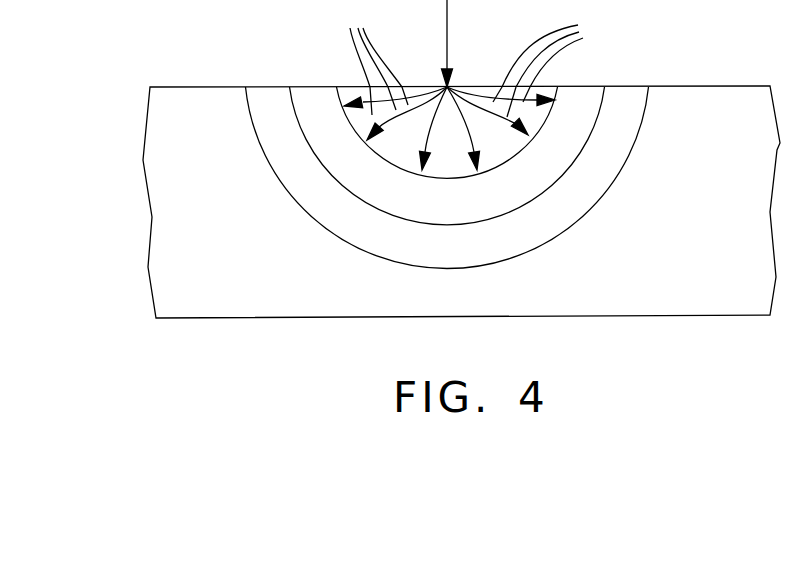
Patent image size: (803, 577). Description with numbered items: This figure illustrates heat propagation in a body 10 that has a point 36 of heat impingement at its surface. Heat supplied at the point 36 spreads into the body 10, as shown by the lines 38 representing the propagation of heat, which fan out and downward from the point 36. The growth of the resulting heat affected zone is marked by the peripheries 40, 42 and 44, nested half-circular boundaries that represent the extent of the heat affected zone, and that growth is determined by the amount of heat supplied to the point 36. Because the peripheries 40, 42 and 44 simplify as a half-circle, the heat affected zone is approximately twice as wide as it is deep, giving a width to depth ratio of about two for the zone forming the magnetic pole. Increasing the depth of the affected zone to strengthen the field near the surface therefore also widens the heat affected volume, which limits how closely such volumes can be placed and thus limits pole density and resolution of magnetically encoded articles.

The body 10 is at (155, 168).
The point of heat impingement 36 is at (447, 87).
The lines representing the propagation of heat 38 is at (473, 59).
The periphery 40 is at (435, 180).
The periphery 42 is at (580, 157).
The periphery 44 is at (590, 212).